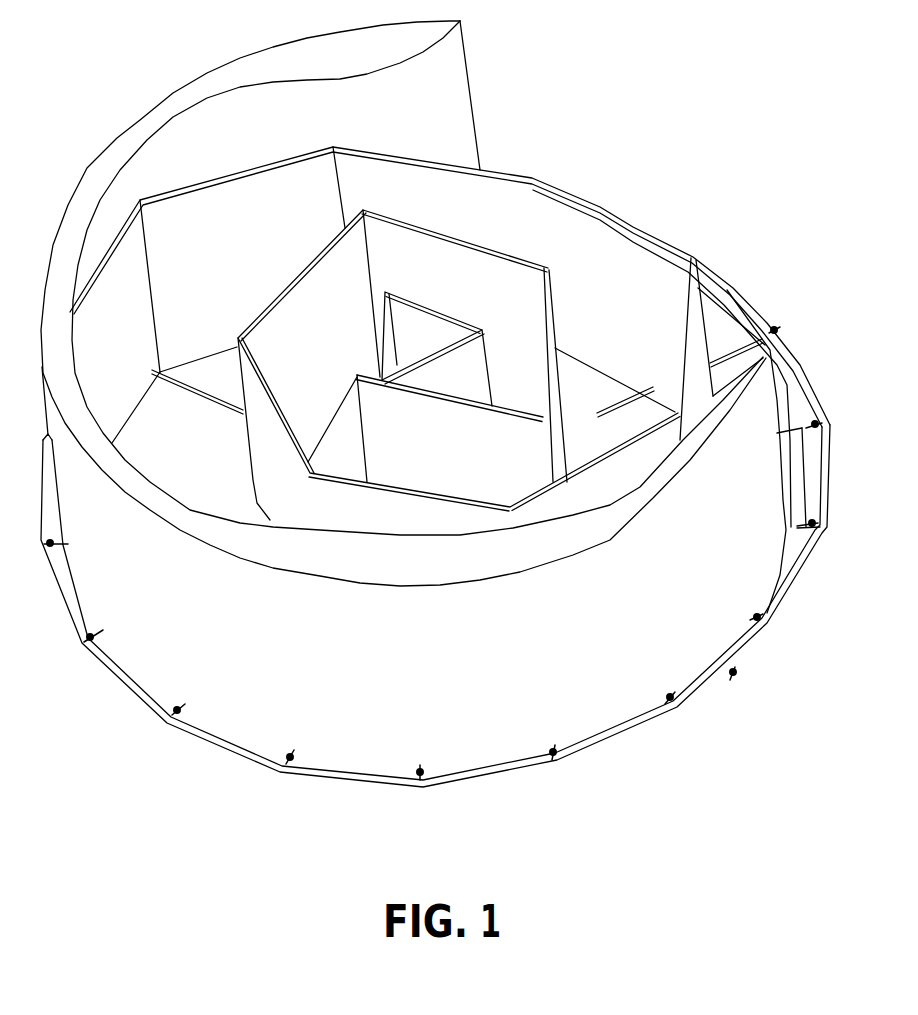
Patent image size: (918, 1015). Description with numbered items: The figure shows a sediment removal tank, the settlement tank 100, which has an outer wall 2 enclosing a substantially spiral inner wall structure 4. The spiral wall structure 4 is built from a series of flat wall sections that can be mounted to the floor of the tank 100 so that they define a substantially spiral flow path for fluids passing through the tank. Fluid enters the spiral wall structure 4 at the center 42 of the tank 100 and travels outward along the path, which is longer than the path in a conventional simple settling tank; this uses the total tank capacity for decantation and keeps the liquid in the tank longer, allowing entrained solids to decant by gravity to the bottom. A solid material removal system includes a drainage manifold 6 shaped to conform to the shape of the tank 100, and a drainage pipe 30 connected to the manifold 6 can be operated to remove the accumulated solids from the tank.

The outer wall 2 is at (52, 294).
The spiral inner wall structure 4 is at (533, 174).
The drainage manifold 6 is at (813, 550).
The drainage pipe 30 is at (727, 350).
The center 42 is at (423, 333).
The settlement tank 100 is at (434, 424).